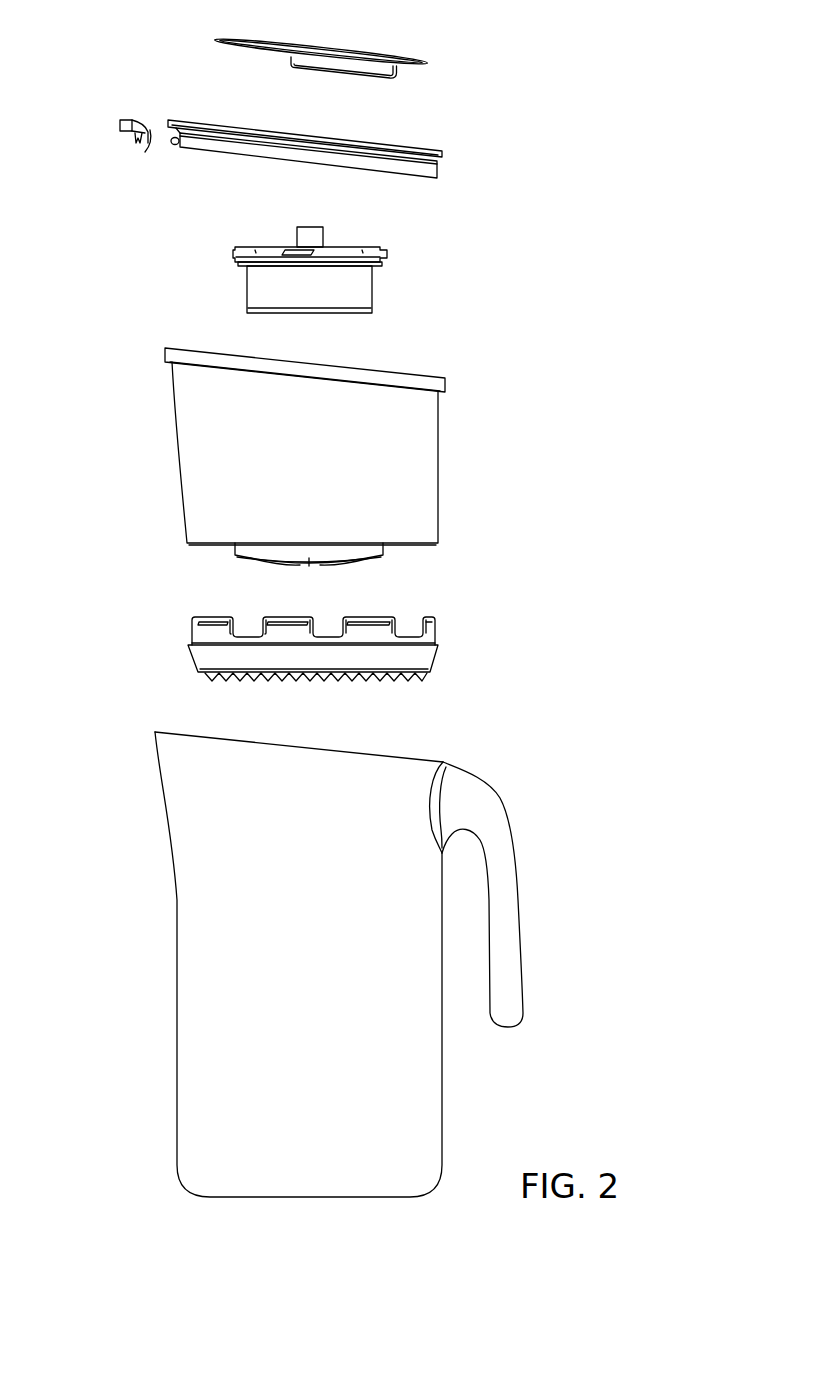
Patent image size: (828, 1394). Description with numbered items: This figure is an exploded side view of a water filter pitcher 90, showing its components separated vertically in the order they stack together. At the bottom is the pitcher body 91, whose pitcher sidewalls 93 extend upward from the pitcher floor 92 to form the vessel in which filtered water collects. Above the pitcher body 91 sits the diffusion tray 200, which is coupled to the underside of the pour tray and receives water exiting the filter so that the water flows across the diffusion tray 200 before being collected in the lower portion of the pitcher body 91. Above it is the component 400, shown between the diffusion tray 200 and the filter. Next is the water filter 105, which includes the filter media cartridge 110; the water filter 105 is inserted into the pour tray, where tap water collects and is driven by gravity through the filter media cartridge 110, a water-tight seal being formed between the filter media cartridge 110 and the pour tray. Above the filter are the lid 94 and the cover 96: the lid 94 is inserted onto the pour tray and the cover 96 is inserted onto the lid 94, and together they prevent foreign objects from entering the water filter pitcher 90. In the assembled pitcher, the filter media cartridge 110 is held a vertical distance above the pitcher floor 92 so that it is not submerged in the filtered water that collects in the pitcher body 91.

The water filter pitcher 90 is at (602, 171).
The pitcher body 91 is at (302, 989).
The pitcher floor 92 is at (295, 1198).
The pitcher sidewalls 93 is at (175, 965).
The lid 94 is at (237, 156).
The cover 96 is at (380, 52).
The water filter 105 is at (229, 248).
The filter media cartridge 110 is at (377, 243).
The diffusion tray 200 is at (189, 659).
The brew chamber 400 is at (442, 446).